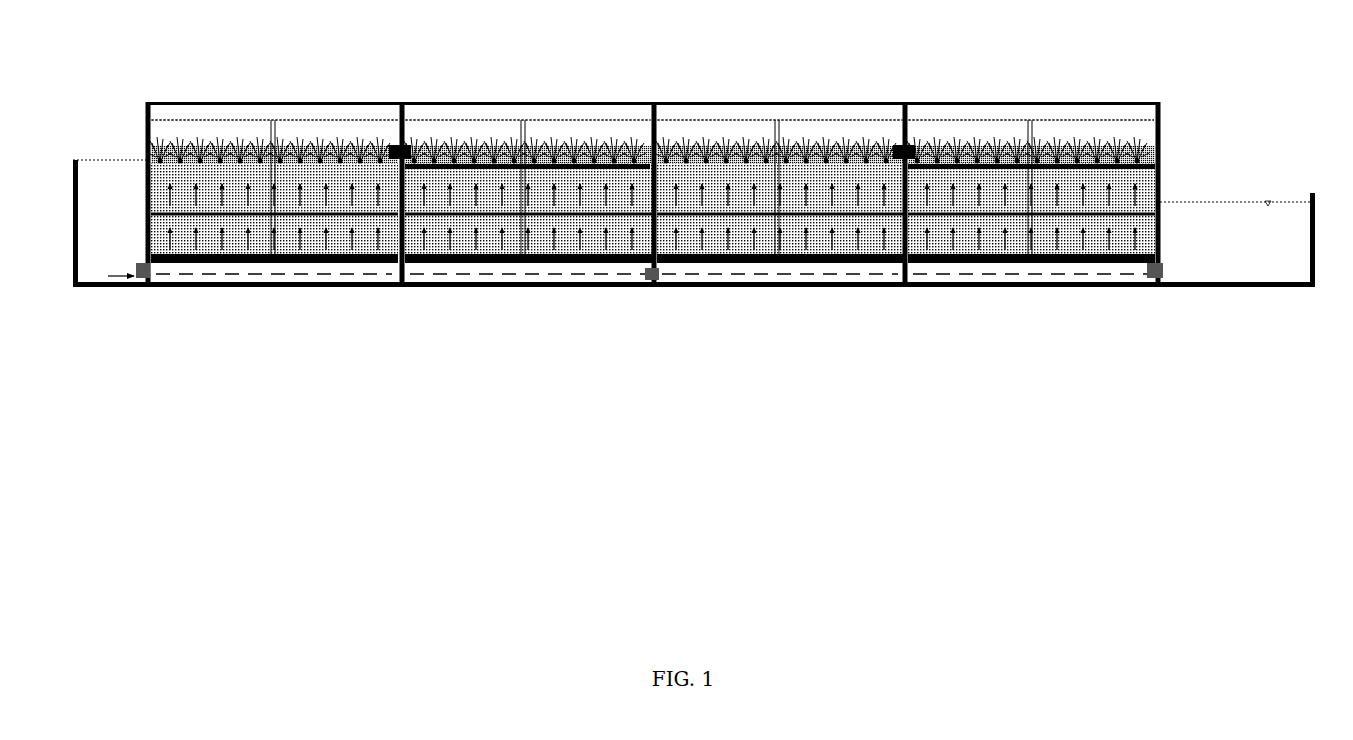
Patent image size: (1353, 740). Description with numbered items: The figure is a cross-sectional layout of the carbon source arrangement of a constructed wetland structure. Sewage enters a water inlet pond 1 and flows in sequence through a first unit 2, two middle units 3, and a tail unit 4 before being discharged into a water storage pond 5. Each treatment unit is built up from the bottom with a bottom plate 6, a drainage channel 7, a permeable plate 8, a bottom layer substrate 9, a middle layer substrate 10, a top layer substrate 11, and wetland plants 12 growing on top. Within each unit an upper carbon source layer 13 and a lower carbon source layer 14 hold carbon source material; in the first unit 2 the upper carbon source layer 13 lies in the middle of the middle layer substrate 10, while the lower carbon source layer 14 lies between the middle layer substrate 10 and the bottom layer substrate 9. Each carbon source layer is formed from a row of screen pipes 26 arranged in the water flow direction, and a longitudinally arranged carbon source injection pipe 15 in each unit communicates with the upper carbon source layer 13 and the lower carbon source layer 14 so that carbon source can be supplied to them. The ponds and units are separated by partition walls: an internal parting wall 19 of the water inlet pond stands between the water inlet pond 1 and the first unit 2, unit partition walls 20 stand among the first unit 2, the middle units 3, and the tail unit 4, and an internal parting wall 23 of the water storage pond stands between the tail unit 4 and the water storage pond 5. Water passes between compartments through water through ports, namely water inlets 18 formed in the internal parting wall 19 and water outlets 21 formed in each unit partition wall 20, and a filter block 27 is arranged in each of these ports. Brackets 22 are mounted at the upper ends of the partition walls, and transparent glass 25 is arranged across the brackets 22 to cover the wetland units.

The water inlet pond 1 is at (120, 158).
The first unit 2 is at (200, 120).
The middle unit 3 is at (463, 120).
The tail unit 4 is at (1005, 120).
The water storage pond 5 is at (1245, 205).
The bottom plate 6 is at (165, 289).
The drainage channel 7 is at (268, 278).
The permeable plate 8 is at (162, 285).
The bottom layer substrate 9 is at (182, 284).
The middle layer substrate 10 is at (148, 162).
The top layer substrate 11 is at (147, 145).
The wetland plant 12 is at (212, 153).
The upper carbon source layer 13 is at (148, 193).
The lower carbon source layer 14 is at (148, 240).
The carbon source injection pipe 15 is at (277, 142).
The water inlet 18 is at (138, 266).
The internal parting wall of water inlet pond 19 is at (148, 218).
The unit partition wall 20 is at (420, 282).
The water outlet 21 is at (412, 150).
The bracket 22 is at (152, 120).
The internal parting wall of water storage pond 23 is at (1162, 160).
The glass 25 is at (272, 100).
The screen pipe 26 is at (340, 282).
The filter block 27 is at (390, 149).